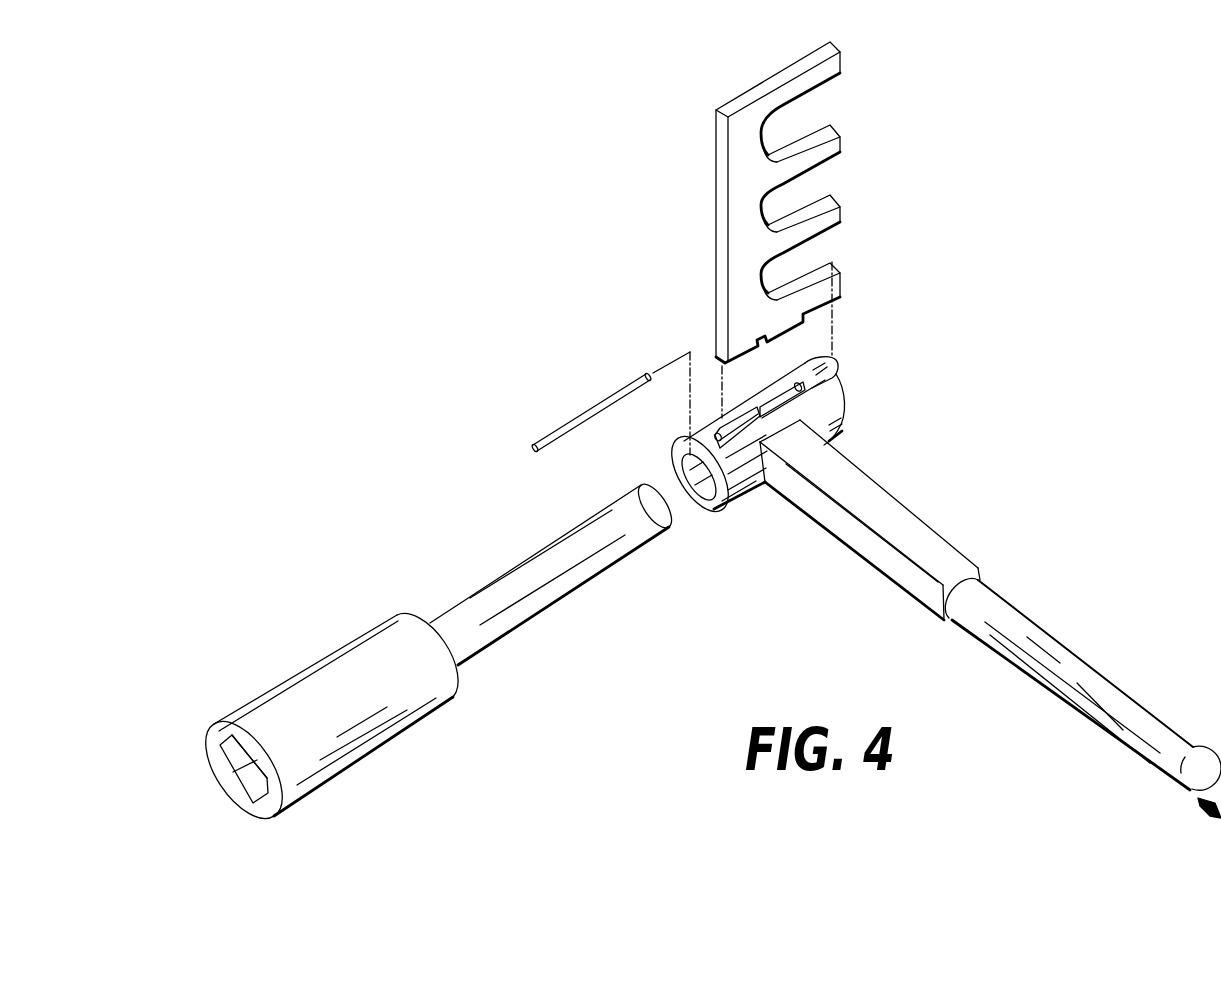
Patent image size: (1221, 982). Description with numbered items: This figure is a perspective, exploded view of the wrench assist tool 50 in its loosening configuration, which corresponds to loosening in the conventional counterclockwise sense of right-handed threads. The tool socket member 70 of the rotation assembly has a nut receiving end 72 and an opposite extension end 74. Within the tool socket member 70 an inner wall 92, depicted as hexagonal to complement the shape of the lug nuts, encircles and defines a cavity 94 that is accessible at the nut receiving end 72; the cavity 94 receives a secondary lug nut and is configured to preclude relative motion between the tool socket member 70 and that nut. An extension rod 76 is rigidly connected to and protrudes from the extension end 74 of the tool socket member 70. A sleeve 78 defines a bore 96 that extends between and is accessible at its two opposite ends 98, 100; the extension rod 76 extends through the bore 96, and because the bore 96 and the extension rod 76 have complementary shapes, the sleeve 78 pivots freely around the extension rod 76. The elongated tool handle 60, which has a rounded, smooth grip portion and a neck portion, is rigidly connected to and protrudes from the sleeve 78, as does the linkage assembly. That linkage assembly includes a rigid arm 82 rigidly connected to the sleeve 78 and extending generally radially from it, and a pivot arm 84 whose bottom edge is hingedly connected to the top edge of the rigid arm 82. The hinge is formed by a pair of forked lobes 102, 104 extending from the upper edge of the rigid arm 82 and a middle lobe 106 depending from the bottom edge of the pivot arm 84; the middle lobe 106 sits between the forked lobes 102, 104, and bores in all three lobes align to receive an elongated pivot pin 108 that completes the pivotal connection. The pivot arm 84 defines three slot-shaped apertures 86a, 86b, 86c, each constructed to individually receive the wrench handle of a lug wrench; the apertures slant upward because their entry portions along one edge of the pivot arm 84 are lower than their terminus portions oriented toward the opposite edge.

The assist tool 50 is at (478, 303).
The tool handle 60 is at (986, 567).
The tool socket member 70 is at (282, 680).
The nut receiving end 72 is at (265, 815).
The extension end 74 is at (462, 675).
The extension rod 76 is at (502, 577).
The sleeve 78 is at (838, 417).
The rigid arm 82 is at (832, 375).
The pivot arm 84 is at (770, 87).
The aperture 86a is at (799, 122).
The aperture 86b is at (798, 185).
The aperture 86c is at (794, 258).
The inner wall 92 is at (230, 772).
The cavity 94 is at (237, 789).
The bore 96 is at (693, 476).
The end of the sleeve 98 is at (712, 502).
The end of the sleeve 100 is at (845, 402).
The forked lobe 102 is at (830, 356).
The forked lobe 104 is at (716, 424).
The middle lobe 106 is at (792, 354).
The pivot pin 108 is at (579, 421).